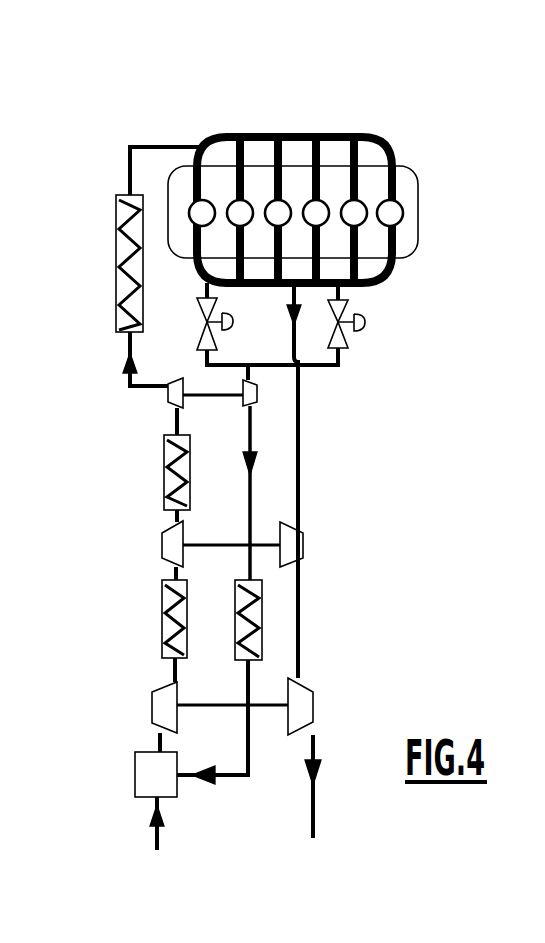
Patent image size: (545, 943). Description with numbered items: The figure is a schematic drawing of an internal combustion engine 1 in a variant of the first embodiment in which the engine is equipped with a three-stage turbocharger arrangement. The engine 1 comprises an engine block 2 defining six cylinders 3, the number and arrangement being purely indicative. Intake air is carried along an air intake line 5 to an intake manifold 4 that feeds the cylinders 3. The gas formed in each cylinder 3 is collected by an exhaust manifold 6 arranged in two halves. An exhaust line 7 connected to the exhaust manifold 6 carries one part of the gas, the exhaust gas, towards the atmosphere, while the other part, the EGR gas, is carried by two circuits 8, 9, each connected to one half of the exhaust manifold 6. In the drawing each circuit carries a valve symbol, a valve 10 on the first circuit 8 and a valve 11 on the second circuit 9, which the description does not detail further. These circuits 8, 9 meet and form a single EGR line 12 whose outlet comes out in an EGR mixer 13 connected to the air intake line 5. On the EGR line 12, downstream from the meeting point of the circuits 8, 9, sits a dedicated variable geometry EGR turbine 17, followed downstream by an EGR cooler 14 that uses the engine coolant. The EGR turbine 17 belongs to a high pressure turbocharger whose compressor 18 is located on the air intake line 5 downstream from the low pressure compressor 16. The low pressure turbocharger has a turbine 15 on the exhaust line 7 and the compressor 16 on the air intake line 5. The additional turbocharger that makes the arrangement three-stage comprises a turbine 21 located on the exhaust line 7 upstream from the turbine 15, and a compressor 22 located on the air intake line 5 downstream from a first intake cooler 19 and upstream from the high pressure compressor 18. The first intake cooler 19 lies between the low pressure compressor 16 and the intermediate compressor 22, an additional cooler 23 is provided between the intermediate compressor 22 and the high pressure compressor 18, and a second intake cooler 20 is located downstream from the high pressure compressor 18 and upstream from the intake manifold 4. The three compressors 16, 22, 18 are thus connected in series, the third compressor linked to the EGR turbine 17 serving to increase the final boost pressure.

The internal combustion engine 1 is at (388, 126).
The engine block 2 is at (412, 170).
The cylinders 3 is at (392, 213).
The intake manifold 4 is at (283, 138).
The air intake line 5 is at (152, 836).
The exhaust manifold 6 is at (385, 268).
The exhaust line 7 is at (316, 807).
The EGR circuit 8 is at (200, 355).
The EGR circuit 9 is at (341, 362).
The exhaust recirculation line 10 is at (200, 320).
The exhaust valve 11 is at (343, 314).
The EGR line 12 is at (238, 778).
The EGR mixer 13 is at (150, 767).
The EGR cooler 14 is at (262, 645).
The turbine 15 is at (300, 708).
The compressor 16 is at (168, 703).
The EGR turbine 17 is at (258, 394).
The compressor 18 is at (165, 405).
The first intake cooler 19 is at (167, 636).
The second intake cooler 20 is at (116, 258).
The turbine 21 is at (303, 545).
The compressor 22 is at (160, 547).
The additional cooler 23 is at (165, 480).